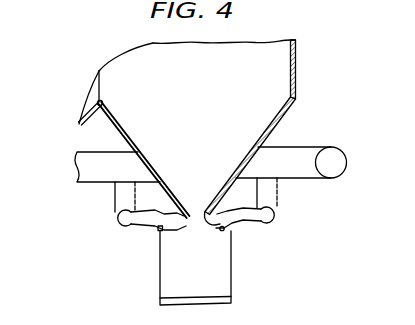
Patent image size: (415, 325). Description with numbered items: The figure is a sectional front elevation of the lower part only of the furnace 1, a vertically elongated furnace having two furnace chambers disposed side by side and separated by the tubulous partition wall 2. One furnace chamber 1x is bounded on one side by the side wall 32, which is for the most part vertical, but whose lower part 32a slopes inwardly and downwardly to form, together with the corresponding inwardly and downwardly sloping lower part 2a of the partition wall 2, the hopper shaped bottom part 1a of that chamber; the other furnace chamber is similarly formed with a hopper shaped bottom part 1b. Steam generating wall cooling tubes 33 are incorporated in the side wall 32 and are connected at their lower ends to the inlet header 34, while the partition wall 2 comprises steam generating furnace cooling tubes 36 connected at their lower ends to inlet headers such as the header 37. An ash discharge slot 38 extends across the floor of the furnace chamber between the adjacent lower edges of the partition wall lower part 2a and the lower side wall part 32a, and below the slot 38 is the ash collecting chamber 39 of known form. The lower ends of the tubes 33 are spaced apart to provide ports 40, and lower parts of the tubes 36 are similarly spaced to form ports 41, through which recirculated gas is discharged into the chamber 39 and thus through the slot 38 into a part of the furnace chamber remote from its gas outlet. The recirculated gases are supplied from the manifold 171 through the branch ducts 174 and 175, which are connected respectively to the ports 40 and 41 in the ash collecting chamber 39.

The furnace 1 is at (65, 92).
The hopper shaped bottom part 1a is at (207, 170).
The hopper shaped bottom part 1b is at (72, 128).
The furnace chamber 1x is at (203, 94).
The partition wall 2 is at (100, 82).
The lower part of partition wall 2a is at (131, 138).
The side wall 32 is at (297, 90).
The lower part of side wall 32a is at (278, 117).
The steam generating wall cooling tubes 33 is at (296, 47).
The inlet header 34 is at (229, 228).
The steam generating furnace cooling tubes 36 is at (103, 70).
The inlet header 37 is at (157, 232).
The ash discharge slot 38 is at (192, 216).
The ash collecting chamber 39 is at (208, 289).
The ports 40 is at (212, 239).
The ports 41 is at (174, 226).
The manifold 171 is at (109, 178).
The branch duct 174 is at (117, 216).
The branch duct 175 is at (276, 198).